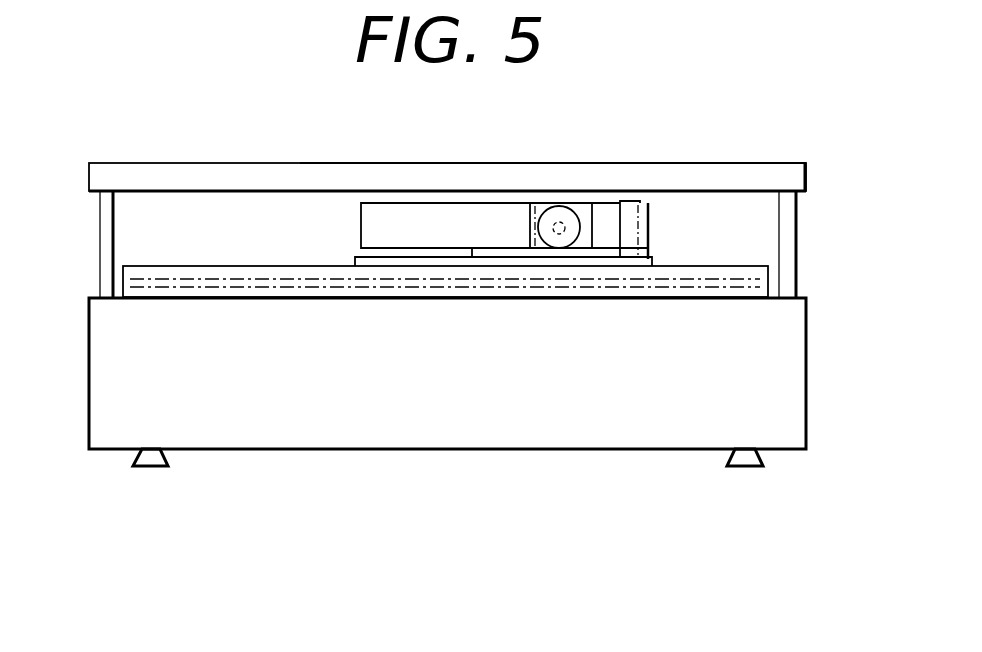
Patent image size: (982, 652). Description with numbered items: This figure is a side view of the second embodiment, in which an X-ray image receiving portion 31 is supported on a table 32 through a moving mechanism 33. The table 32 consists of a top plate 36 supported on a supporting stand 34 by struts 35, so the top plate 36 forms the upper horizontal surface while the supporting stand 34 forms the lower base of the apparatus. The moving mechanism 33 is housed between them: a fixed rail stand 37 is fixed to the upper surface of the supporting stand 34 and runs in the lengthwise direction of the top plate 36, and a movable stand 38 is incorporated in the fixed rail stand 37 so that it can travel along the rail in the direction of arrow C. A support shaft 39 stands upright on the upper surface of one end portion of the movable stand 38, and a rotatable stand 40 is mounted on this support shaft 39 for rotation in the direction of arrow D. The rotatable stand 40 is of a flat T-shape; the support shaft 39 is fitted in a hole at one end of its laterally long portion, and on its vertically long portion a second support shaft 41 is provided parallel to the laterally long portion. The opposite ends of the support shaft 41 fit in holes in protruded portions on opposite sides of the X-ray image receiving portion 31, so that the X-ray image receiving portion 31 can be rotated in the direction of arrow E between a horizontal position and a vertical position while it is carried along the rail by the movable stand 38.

The X-ray image receiving portion 31 is at (488, 228).
The table 32 is at (213, 158).
The moving mechanism 33 is at (660, 232).
The supporting stand 34 is at (787, 358).
The struts 35 is at (787, 221).
The top plate 36 is at (748, 178).
The fixed rail stand 37 is at (757, 277).
The movable stand 38 is at (387, 262).
The support shaft 39 is at (635, 202).
The rotatable stand 40 is at (605, 222).
The support shaft 41 is at (559, 216).